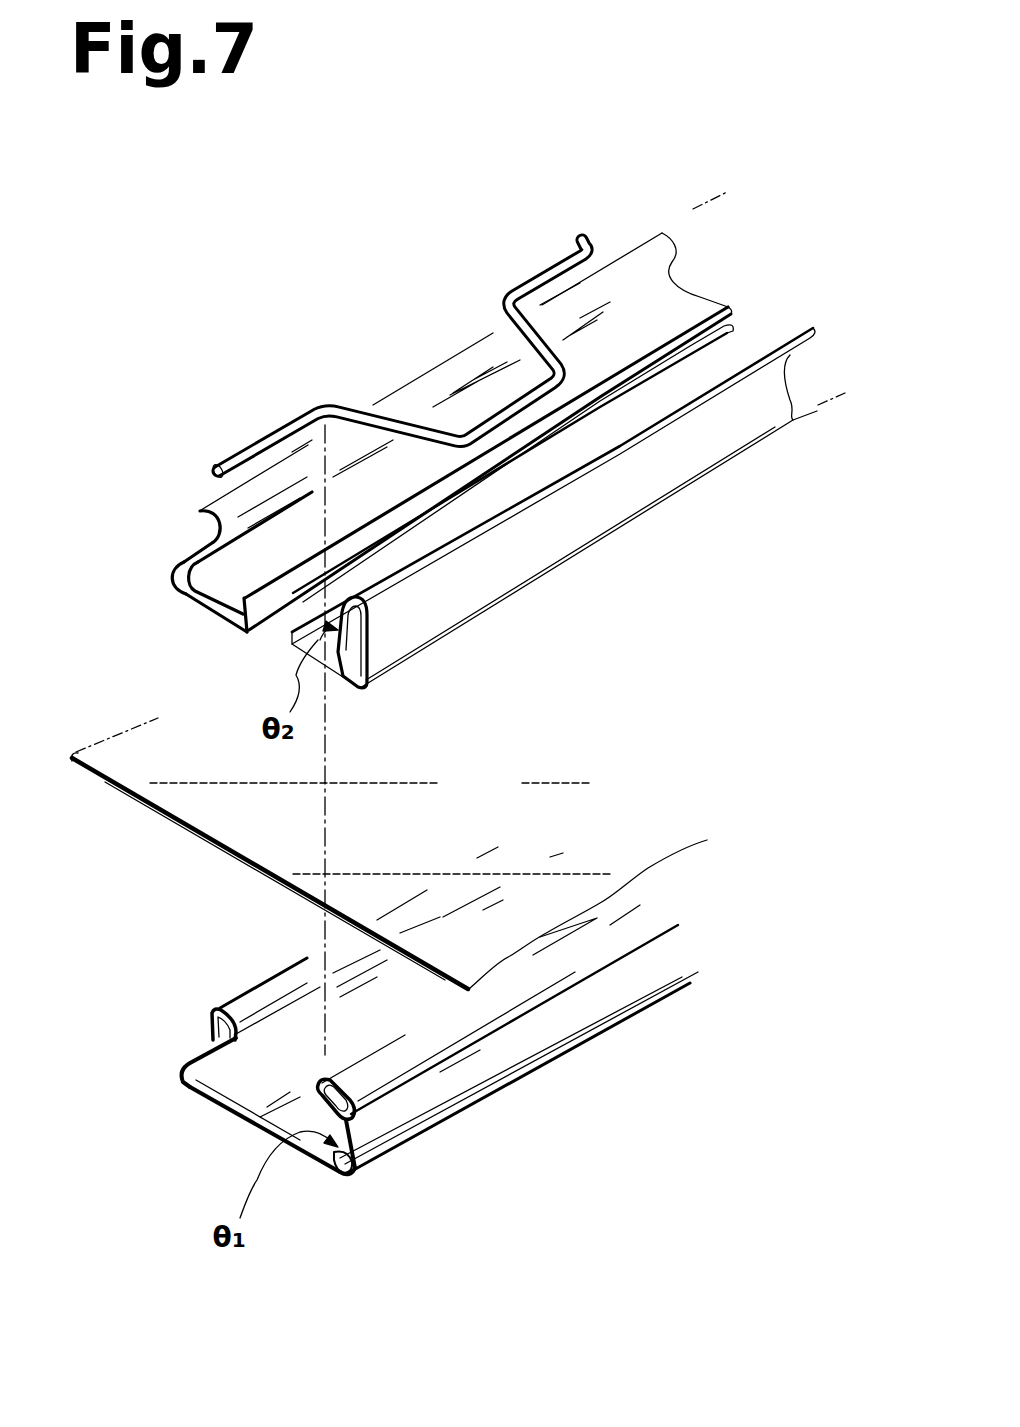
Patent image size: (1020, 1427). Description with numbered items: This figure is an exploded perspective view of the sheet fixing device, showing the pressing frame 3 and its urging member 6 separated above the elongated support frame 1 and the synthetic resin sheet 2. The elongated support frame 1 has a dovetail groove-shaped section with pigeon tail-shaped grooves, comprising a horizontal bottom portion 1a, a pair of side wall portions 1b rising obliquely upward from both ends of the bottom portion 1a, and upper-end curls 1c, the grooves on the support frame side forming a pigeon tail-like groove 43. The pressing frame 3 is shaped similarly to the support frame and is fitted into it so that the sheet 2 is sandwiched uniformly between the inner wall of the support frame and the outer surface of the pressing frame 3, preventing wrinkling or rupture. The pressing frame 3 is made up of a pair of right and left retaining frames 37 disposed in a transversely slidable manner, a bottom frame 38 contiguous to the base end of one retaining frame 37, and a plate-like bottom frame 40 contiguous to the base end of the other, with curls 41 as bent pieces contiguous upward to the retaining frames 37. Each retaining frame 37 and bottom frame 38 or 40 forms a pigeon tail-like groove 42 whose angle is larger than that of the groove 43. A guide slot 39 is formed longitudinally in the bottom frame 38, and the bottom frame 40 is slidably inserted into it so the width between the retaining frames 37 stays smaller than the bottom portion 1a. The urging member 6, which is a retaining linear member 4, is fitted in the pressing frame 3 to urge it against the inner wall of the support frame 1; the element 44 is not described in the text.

The elongated support frame 1 is at (355, 1104).
The horizontal bottom portion 1a is at (195, 1094).
The side wall portions 1b is at (182, 1063).
The upper-end curls 1c is at (215, 1012).
The synthetic resin sheet 2 is at (107, 777).
The pressing frame 3 is at (379, 443).
The retaining linear member 4 is at (399, 335).
The urging member 6 is at (362, 405).
The retaining frames 37 is at (176, 566).
The bottom frame 38 is at (235, 612).
The guide slot 39 is at (194, 597).
The plate-like bottom frame 40 is at (281, 598).
The curls 41 is at (198, 508).
The pigeon tail-like groove 42 is at (368, 650).
The pigeon tail-like groove 43 is at (343, 1177).
The clip portion 44 is at (568, 519).